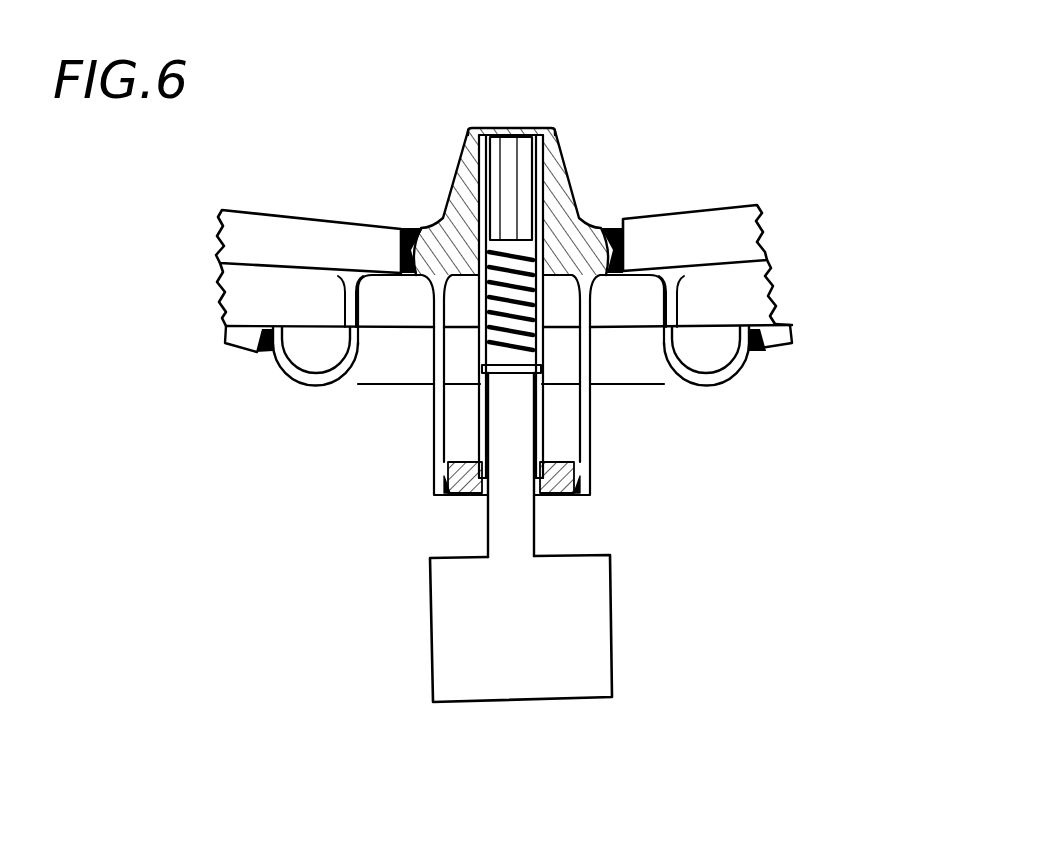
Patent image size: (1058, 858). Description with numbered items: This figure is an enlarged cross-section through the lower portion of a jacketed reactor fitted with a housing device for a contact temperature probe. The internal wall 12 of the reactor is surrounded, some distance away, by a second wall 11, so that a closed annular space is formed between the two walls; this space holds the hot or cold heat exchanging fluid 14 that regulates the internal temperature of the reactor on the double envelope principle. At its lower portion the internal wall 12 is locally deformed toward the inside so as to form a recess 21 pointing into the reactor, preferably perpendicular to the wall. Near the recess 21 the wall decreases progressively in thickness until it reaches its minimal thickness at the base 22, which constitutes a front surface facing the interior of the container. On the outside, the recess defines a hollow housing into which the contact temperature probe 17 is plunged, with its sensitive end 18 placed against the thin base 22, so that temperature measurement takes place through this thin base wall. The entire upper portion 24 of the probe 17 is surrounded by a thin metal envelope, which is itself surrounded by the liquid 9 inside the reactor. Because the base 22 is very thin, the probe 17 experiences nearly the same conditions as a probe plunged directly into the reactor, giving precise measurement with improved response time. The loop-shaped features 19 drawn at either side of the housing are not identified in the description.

The valve assembly 9 is at (760, 144).
The sealing plate 11 is at (232, 338).
The upper wall plate 12 is at (235, 228).
The lower wall plate 14 is at (232, 280).
The actuating rod 17 is at (480, 523).
The flange 18 is at (525, 125).
The tubular loops 19 is at (347, 303).
The sleeve 21 is at (592, 165).
The cap 22 is at (510, 126).
The insert cylinder 24 is at (510, 210).